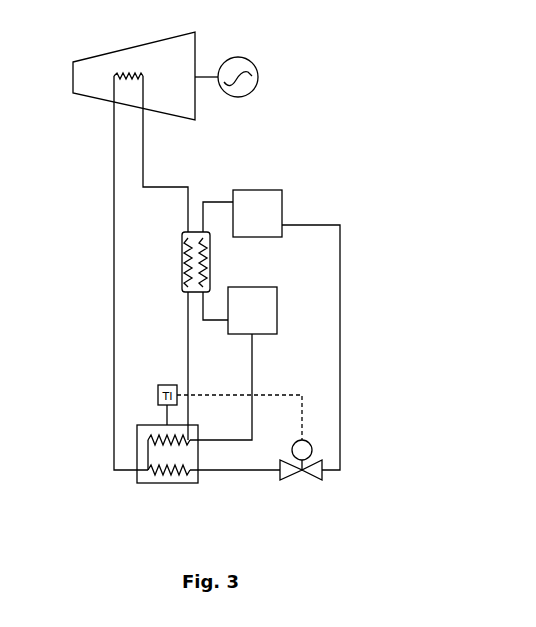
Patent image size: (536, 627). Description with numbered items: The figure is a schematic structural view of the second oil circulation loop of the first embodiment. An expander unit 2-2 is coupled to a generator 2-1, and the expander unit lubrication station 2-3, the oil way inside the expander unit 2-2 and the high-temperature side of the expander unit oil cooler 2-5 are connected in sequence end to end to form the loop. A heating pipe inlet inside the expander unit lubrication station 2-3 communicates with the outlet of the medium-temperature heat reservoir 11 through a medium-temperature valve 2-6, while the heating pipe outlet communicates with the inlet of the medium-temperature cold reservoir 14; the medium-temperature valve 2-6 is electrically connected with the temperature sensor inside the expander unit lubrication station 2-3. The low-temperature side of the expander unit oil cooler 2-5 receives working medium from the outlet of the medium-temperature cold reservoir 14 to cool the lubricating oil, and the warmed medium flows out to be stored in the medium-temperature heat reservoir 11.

The generator 2-1 is at (243, 58).
The expander unit 2-2 is at (127, 47).
The expander unit lubrication station 2-3 is at (168, 485).
The expander unit oil cooler 2-5 is at (180, 258).
The medium-temperature valve 2-6 is at (303, 472).
The medium-temperature heat reservoir 11 is at (282, 212).
The medium-temperature cold reservoir 14 is at (277, 308).